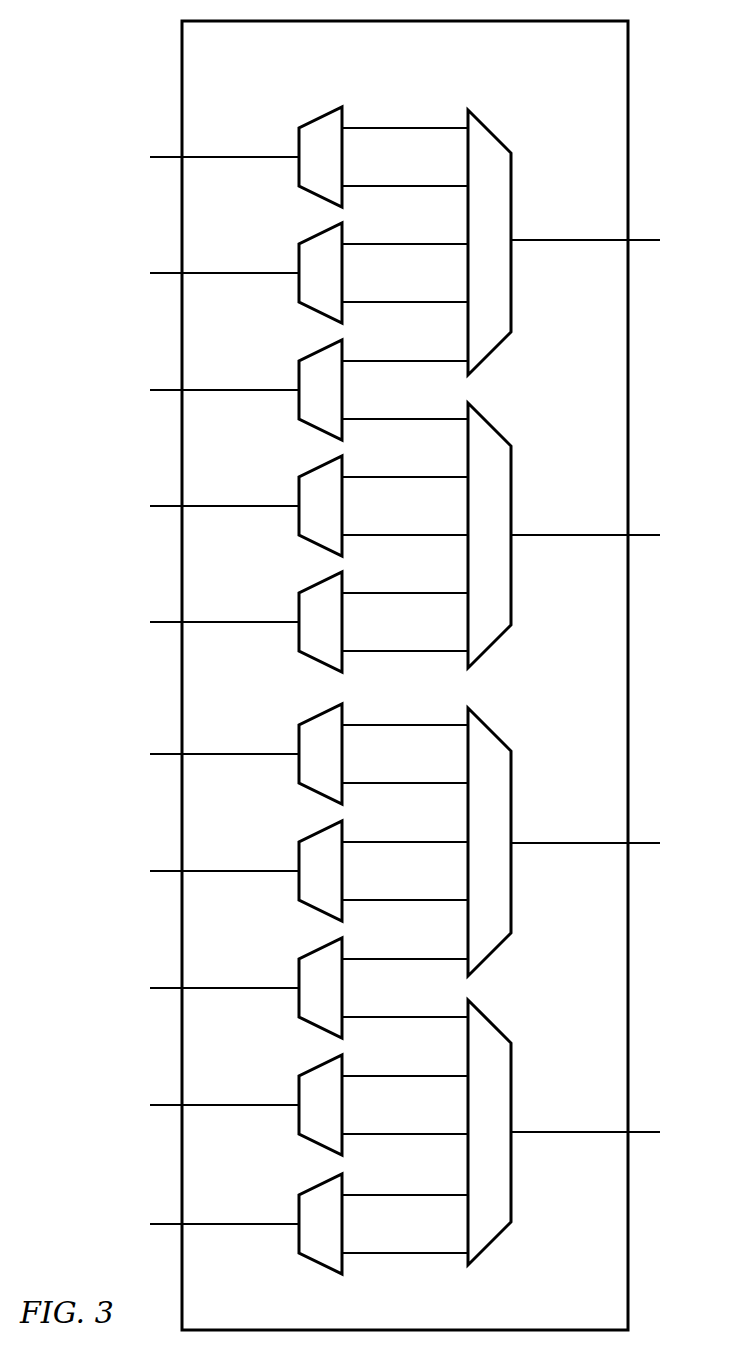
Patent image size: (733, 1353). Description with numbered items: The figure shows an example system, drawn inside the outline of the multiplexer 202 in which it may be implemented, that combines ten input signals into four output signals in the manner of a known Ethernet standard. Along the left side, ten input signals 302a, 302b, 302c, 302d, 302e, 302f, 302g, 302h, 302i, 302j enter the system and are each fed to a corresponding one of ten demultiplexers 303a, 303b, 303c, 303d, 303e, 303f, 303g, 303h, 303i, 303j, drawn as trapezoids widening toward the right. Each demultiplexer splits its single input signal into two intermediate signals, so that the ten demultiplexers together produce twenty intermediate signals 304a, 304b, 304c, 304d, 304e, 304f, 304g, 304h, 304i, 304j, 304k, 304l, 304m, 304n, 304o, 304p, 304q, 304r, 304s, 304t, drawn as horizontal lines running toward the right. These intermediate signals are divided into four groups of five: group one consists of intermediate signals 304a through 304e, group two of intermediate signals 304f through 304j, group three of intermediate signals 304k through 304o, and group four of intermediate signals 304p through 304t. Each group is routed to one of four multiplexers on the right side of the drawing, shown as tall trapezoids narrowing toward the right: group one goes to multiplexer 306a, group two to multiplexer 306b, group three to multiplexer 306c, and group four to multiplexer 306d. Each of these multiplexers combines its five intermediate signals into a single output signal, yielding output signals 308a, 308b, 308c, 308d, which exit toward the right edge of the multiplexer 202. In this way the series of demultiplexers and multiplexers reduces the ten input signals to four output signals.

The multiplexer 202 is at (638, 64).
The input signal 302a is at (240, 160).
The input signal 302b is at (240, 276).
The input signal 302c is at (240, 393).
The input signal 302d is at (240, 509).
The input signal 302e is at (240, 625).
The input signal 302f is at (240, 753).
The input signal 302g is at (240, 870).
The input signal 302h is at (240, 987).
The input signal 302i is at (240, 1104).
The input signal 302j is at (240, 1223).
The demultiplexer 303a is at (297, 143).
The demultiplexer 303b is at (297, 259).
The demultiplexer 303c is at (297, 376).
The demultiplexer 303d is at (297, 492).
The demultiplexer 303e is at (297, 608).
The demultiplexer 303f is at (297, 768).
The demultiplexer 303g is at (297, 885).
The demultiplexer 303h is at (297, 1002).
The demultiplexer 303i is at (297, 1119).
The demultiplexer 303j is at (297, 1238).
The intermediate signal 304a is at (417, 126).
The intermediate signal 304b is at (417, 184).
The intermediate signal 304c is at (417, 242).
The intermediate signal 304d is at (417, 300).
The intermediate signal 304e is at (417, 359).
The intermediate signal 304f is at (417, 417).
The intermediate signal 304g is at (417, 475).
The intermediate signal 304h is at (417, 533).
The intermediate signal 304i is at (417, 591).
The intermediate signal 304j is at (417, 649).
The intermediate signal 304k is at (398, 728).
The intermediate signal 304l is at (398, 786).
The intermediate signal 304m is at (398, 845).
The intermediate signal 304n is at (398, 903).
The intermediate signal 304o is at (398, 962).
The intermediate signal 304p is at (398, 1020).
The intermediate signal 304q is at (398, 1079).
The intermediate signal 304r is at (398, 1137).
The intermediate signal 304s is at (398, 1198).
The intermediate signal 304t is at (398, 1256).
The multiplexer 306a is at (518, 120).
The multiplexer 306b is at (518, 412).
The multiplexer 306c is at (493, 951).
The multiplexer 306d is at (493, 1240).
The output signal 308a is at (575, 238).
The output signal 308b is at (575, 533).
The output signal 308c is at (568, 846).
The output signal 308d is at (568, 1135).